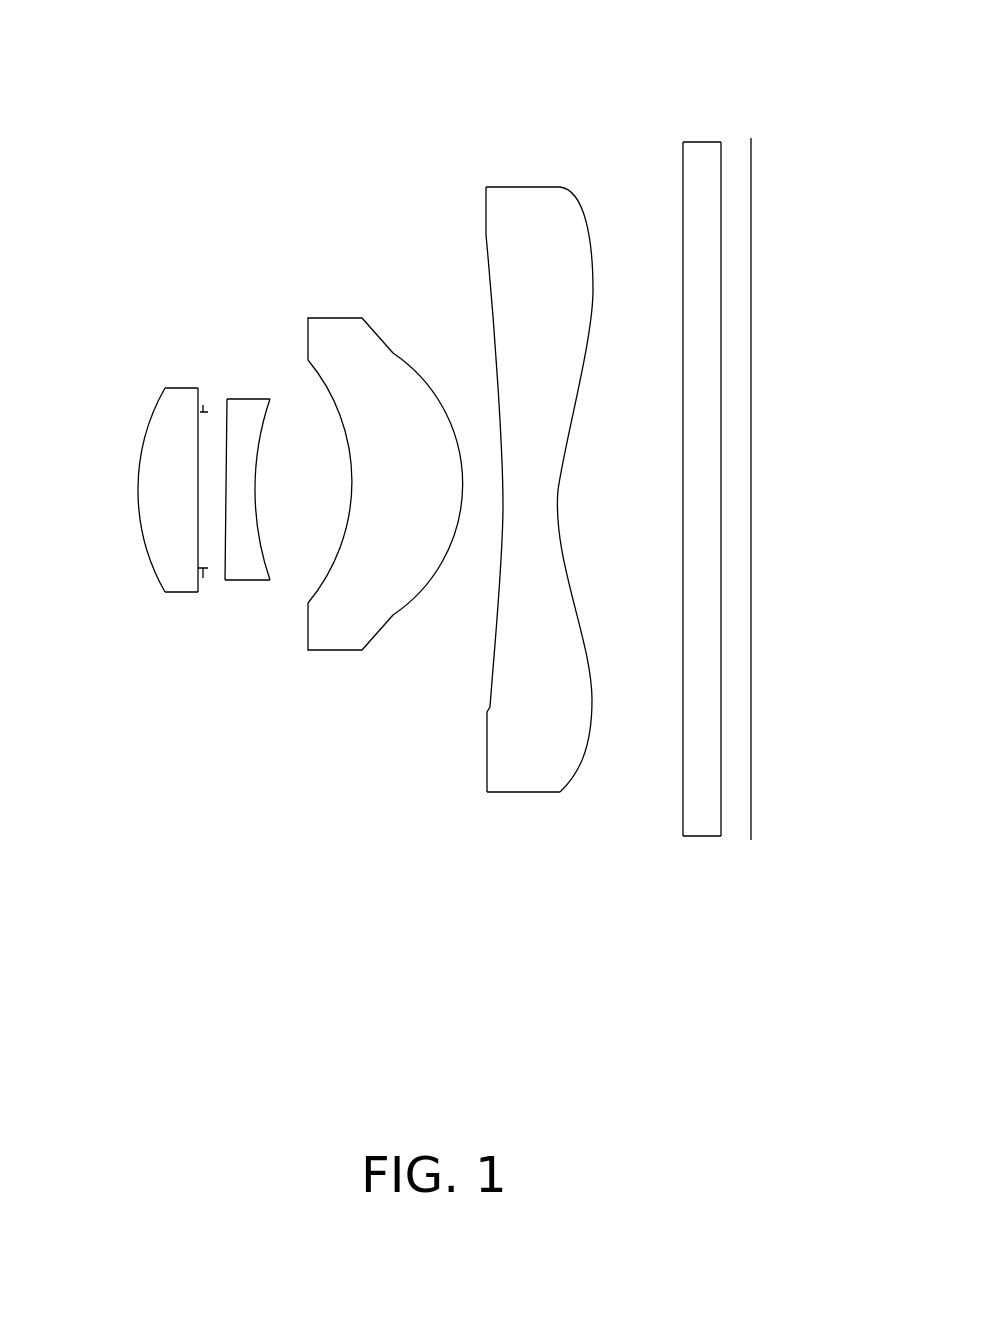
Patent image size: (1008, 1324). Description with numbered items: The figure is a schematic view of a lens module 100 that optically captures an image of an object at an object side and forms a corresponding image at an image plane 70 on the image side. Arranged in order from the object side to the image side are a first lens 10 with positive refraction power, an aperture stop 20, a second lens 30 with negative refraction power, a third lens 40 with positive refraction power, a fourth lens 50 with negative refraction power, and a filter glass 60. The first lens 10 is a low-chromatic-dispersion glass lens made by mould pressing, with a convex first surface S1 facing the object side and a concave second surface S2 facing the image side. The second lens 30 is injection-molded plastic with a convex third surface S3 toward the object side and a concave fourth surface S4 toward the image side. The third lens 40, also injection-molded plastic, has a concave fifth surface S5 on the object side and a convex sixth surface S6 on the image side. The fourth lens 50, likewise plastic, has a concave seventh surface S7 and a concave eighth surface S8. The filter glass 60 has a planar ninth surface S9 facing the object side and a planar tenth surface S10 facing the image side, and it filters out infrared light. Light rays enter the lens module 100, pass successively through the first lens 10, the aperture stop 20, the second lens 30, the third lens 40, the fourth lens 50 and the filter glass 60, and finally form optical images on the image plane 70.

The lens module 100 is at (293, 64).
The first lens 10 is at (162, 427).
The aperture stop 20 is at (202, 412).
The second lens 30 is at (243, 413).
The third lens 40 is at (328, 338).
The fourth lens 50 is at (522, 207).
The filter glass 60 is at (693, 160).
The image plane 70 is at (752, 203).
The first surface S1 is at (150, 555).
The second surface S2 is at (198, 537).
The third surface S3 is at (225, 547).
The fourth surface S4 is at (257, 472).
The fifth surface S5 is at (348, 540).
The sixth surface S6 is at (400, 628).
The seventh surface S7 is at (490, 707).
The eighth surface S8 is at (593, 710).
The ninth surface S9 is at (682, 773).
The tenth surface S10 is at (722, 795).